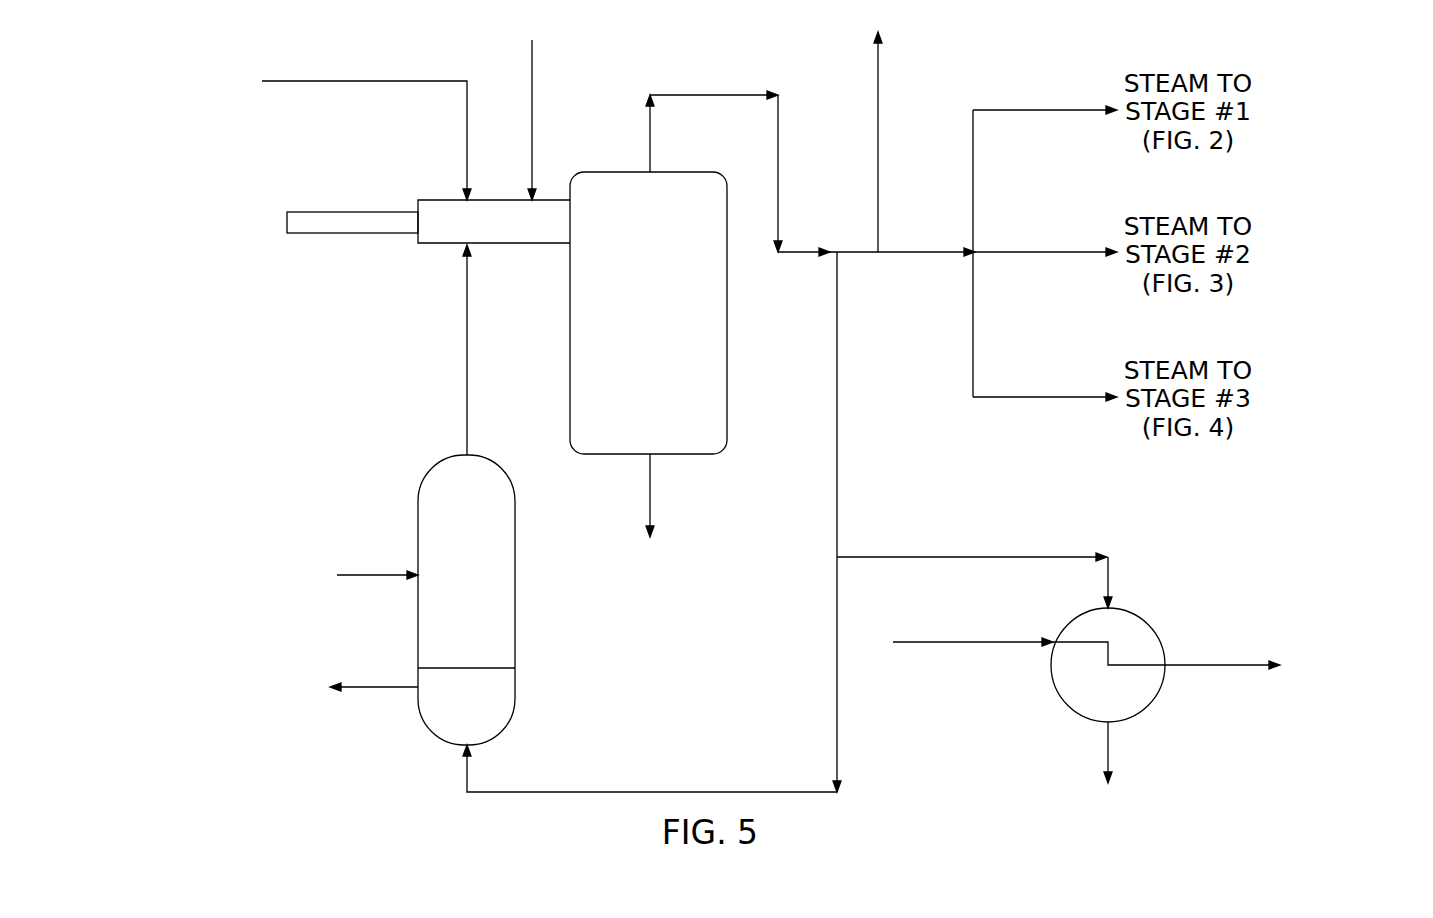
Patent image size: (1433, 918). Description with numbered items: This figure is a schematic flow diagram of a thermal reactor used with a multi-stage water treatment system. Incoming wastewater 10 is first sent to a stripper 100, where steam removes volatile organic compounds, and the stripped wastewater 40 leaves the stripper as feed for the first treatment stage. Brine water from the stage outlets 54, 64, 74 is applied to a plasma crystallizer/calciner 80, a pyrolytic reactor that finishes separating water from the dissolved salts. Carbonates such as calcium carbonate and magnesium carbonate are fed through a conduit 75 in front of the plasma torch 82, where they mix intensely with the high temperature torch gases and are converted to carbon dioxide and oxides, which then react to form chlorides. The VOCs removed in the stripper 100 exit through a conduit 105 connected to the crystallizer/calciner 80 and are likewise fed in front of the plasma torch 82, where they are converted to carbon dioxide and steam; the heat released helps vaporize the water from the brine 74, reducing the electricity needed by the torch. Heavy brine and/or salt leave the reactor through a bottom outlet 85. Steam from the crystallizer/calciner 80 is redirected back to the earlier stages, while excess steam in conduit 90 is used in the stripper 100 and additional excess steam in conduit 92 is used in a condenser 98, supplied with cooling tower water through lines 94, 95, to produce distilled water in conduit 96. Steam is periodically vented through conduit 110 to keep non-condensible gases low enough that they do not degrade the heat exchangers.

The wastewater 10 is at (363, 575).
The stripped wastewater 40 is at (380, 688).
The first stage brine outlet 54 is at (284, 122).
The second stage brine outlet 64 is at (284, 122).
The third stage brine outlet 74 is at (379, 82).
The carbonate feed conduit 75 is at (532, 112).
The plasma crystallizer/calciner 80 is at (570, 285).
The plasma torch 82 is at (347, 233).
The heavy brine and/or salt outlet 85 is at (650, 500).
The excess steam conduit 90 is at (837, 360).
The excess steam conduit to condenser 92 is at (1052, 555).
The cooling tower water inlet 94 is at (1015, 640).
The cooling tower water outlet 95 is at (1237, 666).
The distilled water conduit 96 is at (1108, 760).
The condenser 98 is at (1094, 701).
The stripper 100 is at (515, 652).
The VOC conduit 105 is at (467, 385).
The vent conduit 110 is at (880, 174).